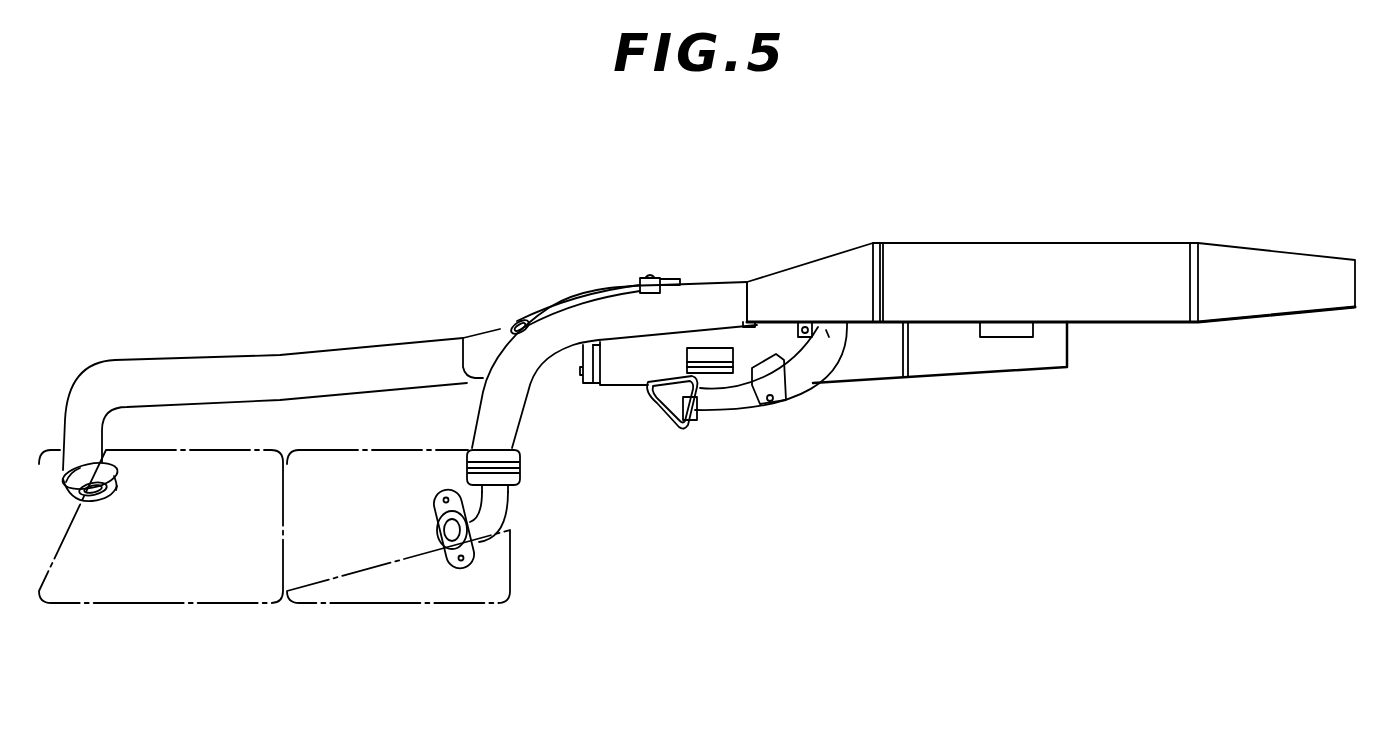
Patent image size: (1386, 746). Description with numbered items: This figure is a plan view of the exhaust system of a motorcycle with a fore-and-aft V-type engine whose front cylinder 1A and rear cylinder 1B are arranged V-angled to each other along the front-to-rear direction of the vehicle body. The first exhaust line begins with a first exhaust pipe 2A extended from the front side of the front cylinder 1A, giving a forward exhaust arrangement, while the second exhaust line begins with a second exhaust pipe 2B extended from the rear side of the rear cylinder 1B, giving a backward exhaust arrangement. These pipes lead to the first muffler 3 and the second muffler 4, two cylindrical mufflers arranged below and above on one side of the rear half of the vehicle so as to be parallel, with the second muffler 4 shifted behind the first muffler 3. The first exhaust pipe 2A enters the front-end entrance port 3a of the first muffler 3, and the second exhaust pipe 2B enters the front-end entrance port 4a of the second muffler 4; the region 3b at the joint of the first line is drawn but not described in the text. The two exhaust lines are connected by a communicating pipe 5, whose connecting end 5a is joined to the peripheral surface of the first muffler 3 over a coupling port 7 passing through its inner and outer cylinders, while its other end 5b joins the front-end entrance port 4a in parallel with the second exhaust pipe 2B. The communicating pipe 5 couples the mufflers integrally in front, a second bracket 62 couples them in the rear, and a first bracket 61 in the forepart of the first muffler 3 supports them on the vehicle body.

The front cylinder 1A is at (242, 577).
The rear cylinder 1B is at (352, 582).
The first exhaust pipe 2A is at (308, 368).
The second exhaust pipe 2B is at (572, 317).
The first muffler 3 is at (885, 362).
The front-end entrance port 3a is at (463, 352).
The second connecting portion 3b is at (612, 387).
The second muffler 4 is at (1105, 250).
The front-end entrance port 4a is at (745, 290).
The communicating pipe 5 is at (740, 403).
The connecting end 5a is at (703, 413).
The other end 5b is at (828, 335).
The first bracket 61 is at (710, 353).
The second bracket 62 is at (1010, 333).
The coupling port 7 is at (660, 410).